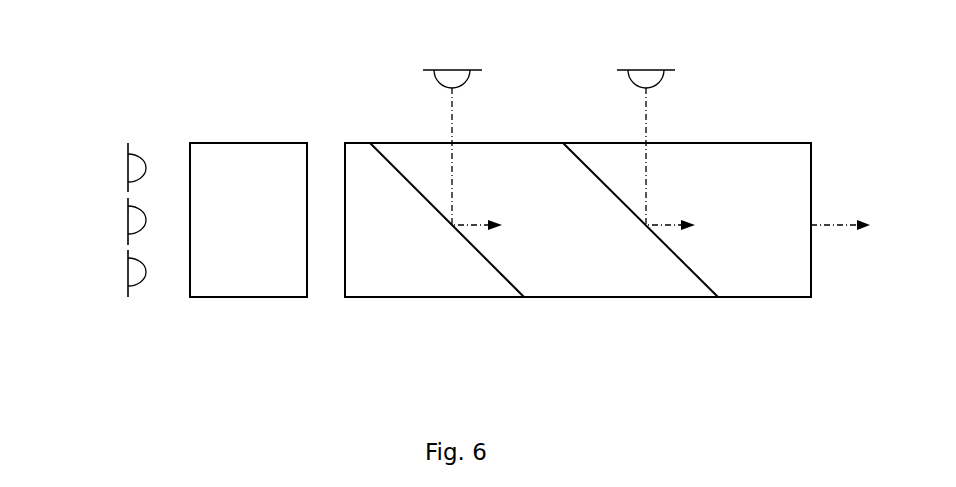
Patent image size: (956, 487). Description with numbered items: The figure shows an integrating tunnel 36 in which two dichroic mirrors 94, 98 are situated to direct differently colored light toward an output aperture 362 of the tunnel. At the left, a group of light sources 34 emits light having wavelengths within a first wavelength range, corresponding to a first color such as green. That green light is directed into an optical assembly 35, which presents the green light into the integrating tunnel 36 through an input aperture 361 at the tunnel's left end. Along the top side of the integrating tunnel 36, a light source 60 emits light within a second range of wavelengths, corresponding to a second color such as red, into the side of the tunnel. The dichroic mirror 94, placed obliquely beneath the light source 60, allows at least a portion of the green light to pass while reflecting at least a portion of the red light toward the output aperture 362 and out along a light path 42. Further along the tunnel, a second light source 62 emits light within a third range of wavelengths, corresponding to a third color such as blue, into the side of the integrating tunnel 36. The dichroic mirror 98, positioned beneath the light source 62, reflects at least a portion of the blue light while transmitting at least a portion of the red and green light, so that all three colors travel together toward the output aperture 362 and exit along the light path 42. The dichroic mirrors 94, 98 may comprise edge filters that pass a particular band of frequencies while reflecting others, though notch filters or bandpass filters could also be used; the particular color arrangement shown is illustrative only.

The light sources 34 is at (112, 143).
The optical assembly 35 is at (238, 143).
The integrating tunnel 36 is at (755, 143).
The input aperture 361 is at (340, 282).
The output aperture 362 is at (811, 268).
The dichroic mirror 94 is at (497, 270).
The dichroic mirror 98 is at (693, 272).
The light source 60 is at (452, 65).
The light source 62 is at (646, 65).
The light path 42 is at (841, 225).